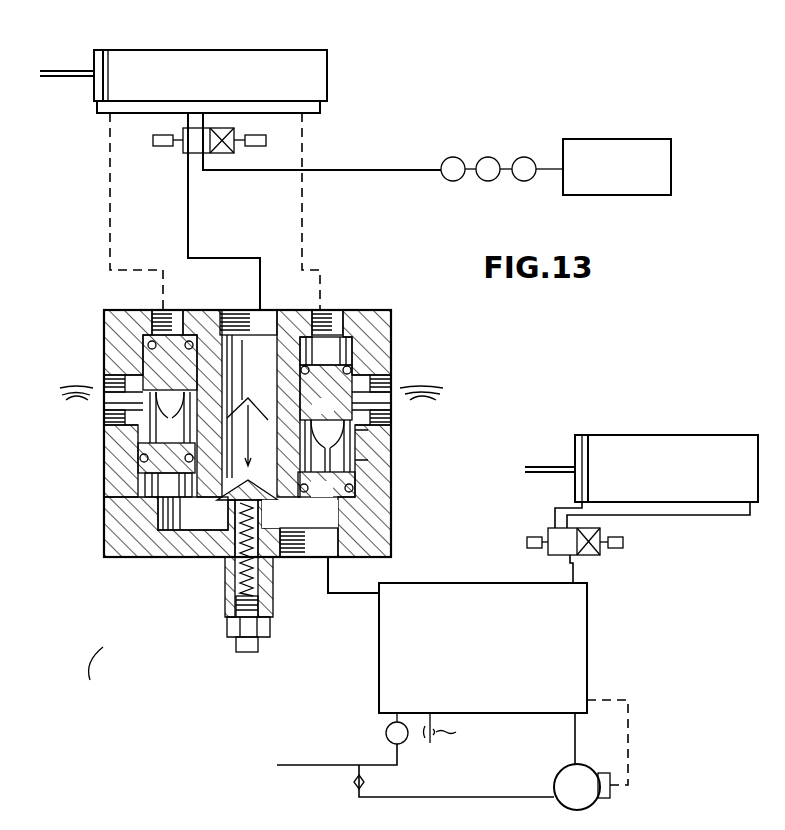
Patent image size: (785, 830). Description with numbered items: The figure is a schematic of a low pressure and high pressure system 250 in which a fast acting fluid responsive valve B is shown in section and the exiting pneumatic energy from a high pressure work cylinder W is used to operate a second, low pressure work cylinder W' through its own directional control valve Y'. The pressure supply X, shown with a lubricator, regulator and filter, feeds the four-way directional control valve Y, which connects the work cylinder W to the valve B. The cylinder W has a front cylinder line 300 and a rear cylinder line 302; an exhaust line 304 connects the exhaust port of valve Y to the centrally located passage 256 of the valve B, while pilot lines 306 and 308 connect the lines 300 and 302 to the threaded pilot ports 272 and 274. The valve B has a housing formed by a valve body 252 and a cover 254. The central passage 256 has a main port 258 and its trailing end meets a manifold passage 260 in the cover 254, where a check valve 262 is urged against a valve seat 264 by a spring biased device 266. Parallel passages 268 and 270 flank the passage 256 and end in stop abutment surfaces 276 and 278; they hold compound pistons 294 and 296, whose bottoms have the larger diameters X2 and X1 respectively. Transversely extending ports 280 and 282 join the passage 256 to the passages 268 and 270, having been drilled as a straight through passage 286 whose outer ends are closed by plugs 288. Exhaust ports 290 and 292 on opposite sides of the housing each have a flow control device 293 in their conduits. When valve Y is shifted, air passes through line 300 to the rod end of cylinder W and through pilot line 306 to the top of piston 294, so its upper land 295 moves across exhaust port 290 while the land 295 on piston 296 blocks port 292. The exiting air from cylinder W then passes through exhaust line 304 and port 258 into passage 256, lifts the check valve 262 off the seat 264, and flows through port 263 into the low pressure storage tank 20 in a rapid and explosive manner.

The work cylinder W is at (183, 53).
The front cylinder line 300 is at (98, 113).
The rear cylinder line 302 is at (321, 117).
The four-way directional control valve Y is at (218, 133).
The exhaust line 304 is at (188, 188).
The pilot line 306 is at (110, 186).
The pilot line 308 is at (303, 211).
The pressure supply X is at (673, 157).
The fast acting fluid responsive valve B is at (83, 562).
The low pressure and high pressure system 250 is at (110, 668).
The threaded port 272 is at (160, 310).
The main port 258 is at (273, 310).
The threaded port 274 is at (355, 328).
The centrally located passage 256 is at (235, 310).
The passage 268 is at (104, 352).
The upper land 295 is at (104, 318).
The passage 270 is at (353, 343).
The diameter X1 is at (322, 407).
The diameter X2 is at (322, 490).
The exhaust port 290 is at (104, 380).
The transversely extending port 280 is at (104, 418).
The exhaust port 292 is at (392, 382).
The transversely extending port 282 is at (392, 433).
The flow control device 293 is at (62, 393).
The straight through passage 286 is at (104, 433).
The plug 288 is at (350, 428).
The valve body 252 is at (108, 468).
The stop abutment surface 276 is at (108, 493).
The stop abutment surface 278 is at (360, 500).
The compound piston 296 is at (345, 458).
The valve seat 264 is at (277, 504).
The manifold passage 260 is at (207, 557).
The spring biased device 266 is at (225, 617).
The compound piston 294 is at (170, 545).
The cover 254 is at (137, 556).
The check valve 262 is at (278, 558).
The port 263 is at (330, 558).
The second work cylinder W' is at (641, 463).
The four-way directional control valve Y' is at (590, 555).
The low pressure storage tank 20 is at (588, 660).